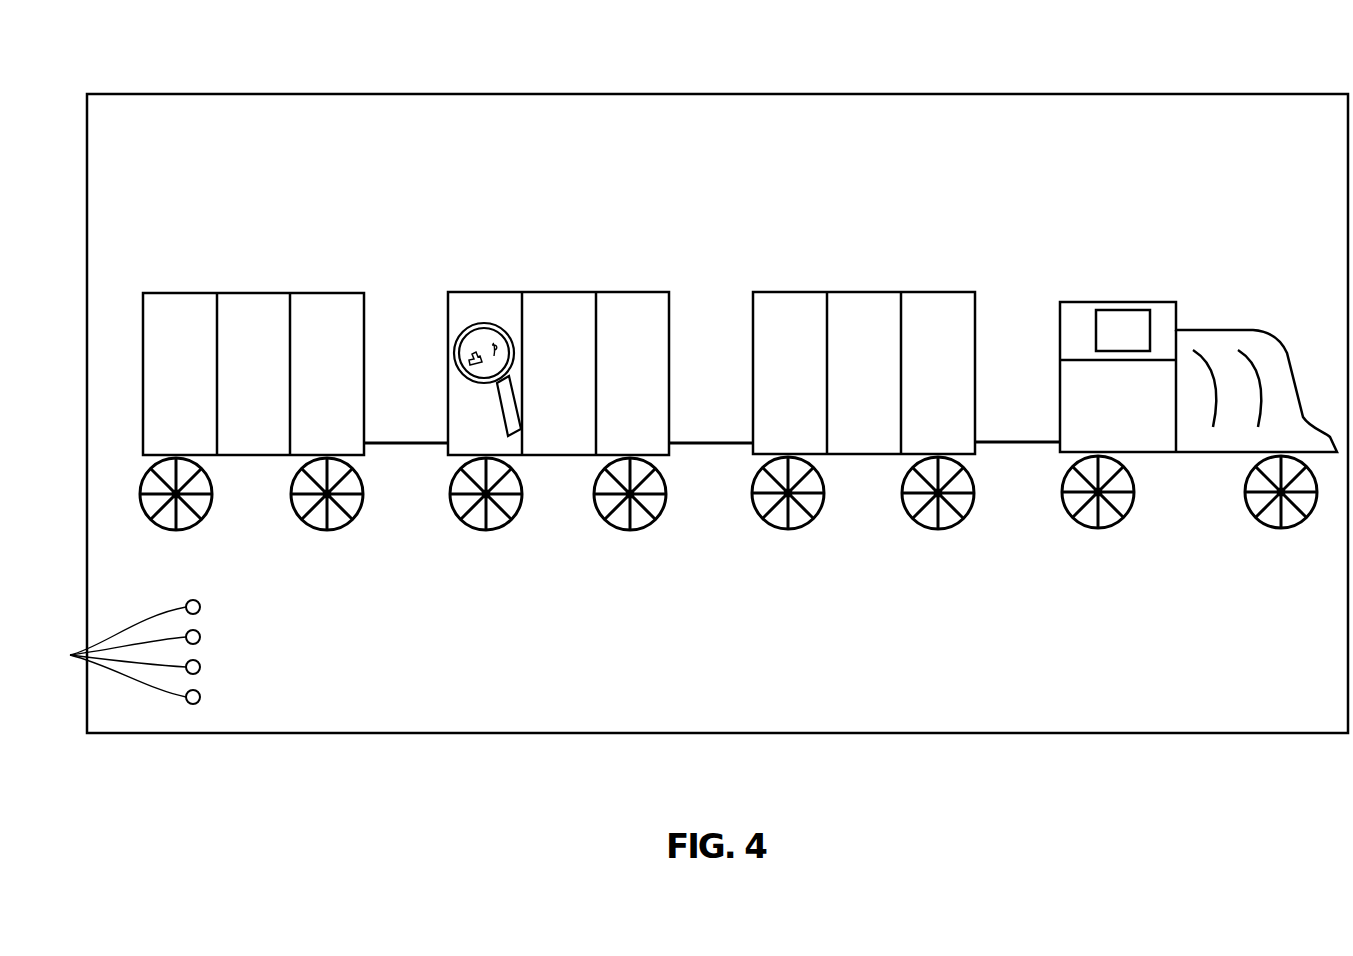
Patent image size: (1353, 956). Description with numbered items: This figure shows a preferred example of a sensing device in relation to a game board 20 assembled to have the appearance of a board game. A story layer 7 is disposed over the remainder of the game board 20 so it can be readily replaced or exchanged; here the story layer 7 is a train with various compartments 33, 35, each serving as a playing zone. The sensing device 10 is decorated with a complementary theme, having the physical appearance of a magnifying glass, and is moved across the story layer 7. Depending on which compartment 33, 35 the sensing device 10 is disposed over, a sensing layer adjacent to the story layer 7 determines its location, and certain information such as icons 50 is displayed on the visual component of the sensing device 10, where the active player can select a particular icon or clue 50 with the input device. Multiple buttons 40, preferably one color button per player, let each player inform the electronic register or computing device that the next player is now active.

The game board 20 is at (878, 94).
The story layer 7 is at (1252, 152).
The compartment 33 is at (252, 307).
The compartment 35 is at (313, 327).
The icon 50 is at (475, 358).
The sensing device 10 is at (493, 350).
The buttons 40 is at (70, 655).